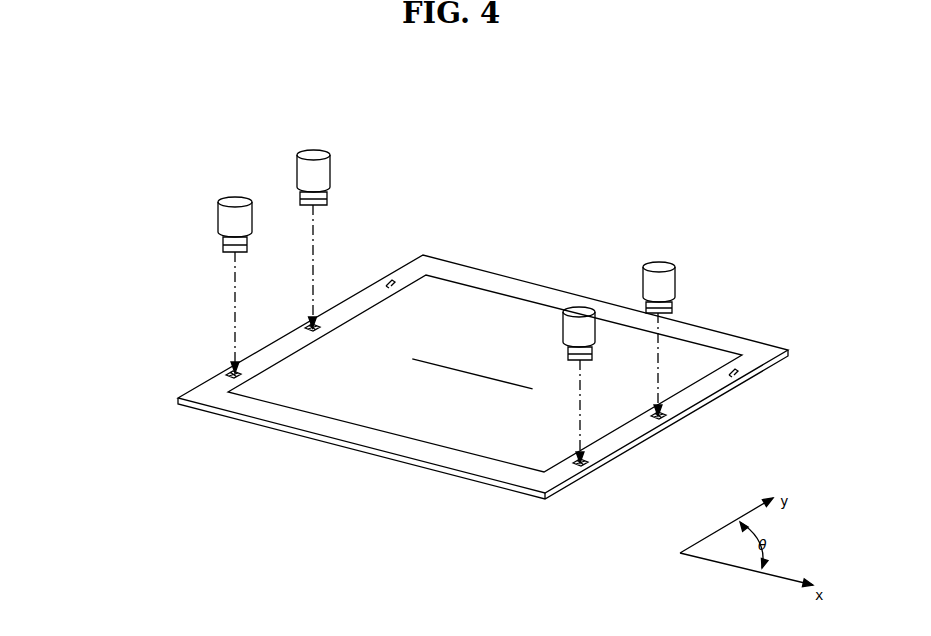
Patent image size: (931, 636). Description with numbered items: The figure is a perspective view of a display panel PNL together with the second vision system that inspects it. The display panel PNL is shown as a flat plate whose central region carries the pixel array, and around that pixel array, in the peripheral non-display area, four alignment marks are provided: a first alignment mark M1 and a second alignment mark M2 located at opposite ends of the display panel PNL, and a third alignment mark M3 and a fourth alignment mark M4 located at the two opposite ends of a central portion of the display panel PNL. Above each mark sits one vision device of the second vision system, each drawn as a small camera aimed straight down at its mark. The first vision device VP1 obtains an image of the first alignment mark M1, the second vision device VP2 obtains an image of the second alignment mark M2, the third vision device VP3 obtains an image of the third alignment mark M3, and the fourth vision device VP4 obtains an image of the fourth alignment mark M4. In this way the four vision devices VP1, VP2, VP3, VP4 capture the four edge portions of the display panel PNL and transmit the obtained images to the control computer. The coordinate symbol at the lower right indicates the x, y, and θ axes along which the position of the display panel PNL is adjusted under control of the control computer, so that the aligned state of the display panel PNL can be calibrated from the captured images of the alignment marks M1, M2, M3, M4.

The display panel PNL is at (727, 340).
The first alignment mark M1 is at (584, 465).
The second alignment mark M2 is at (227, 375).
The third alignment mark M3 is at (664, 418).
The fourth alignment mark M4 is at (308, 327).
The first vision device VP1 is at (582, 307).
The second vision device VP2 is at (233, 202).
The third vision device VP3 is at (667, 268).
The fourth vision device VP4 is at (310, 157).